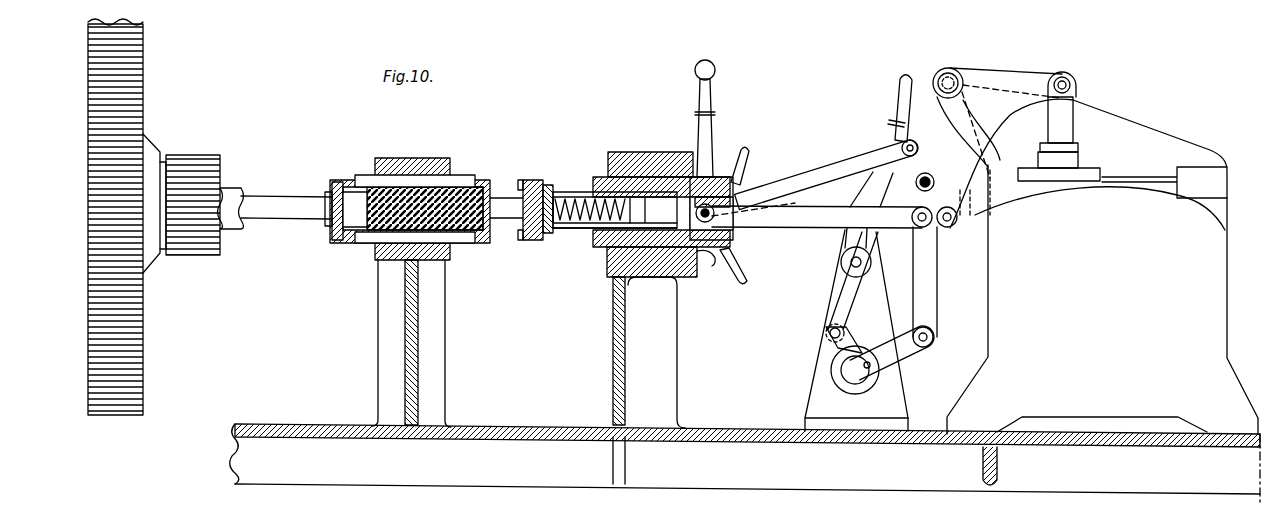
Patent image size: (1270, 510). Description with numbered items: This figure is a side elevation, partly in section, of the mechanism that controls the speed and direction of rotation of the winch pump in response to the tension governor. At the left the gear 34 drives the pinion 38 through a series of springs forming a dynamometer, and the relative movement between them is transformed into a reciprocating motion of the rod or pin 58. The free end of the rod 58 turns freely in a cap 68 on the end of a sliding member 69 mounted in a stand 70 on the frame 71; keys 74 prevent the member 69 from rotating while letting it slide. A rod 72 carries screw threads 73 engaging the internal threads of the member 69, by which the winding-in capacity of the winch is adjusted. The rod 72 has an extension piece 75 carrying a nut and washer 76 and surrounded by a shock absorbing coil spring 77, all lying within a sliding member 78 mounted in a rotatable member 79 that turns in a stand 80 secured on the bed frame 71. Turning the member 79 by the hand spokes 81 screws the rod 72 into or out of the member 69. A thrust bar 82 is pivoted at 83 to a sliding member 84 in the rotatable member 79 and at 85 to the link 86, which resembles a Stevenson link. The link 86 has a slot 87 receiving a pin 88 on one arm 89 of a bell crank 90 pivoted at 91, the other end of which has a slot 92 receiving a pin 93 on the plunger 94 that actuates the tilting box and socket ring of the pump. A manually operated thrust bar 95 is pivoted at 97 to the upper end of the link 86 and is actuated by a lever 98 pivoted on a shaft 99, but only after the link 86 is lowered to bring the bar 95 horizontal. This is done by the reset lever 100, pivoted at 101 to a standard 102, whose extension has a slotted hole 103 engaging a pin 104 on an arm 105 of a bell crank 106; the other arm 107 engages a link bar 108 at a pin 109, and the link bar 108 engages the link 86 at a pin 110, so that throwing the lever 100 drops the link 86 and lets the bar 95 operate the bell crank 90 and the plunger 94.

The gear 34 is at (135, 96).
The pinion 38 is at (206, 156).
The rod or pin 58 is at (265, 217).
The cap 68 is at (330, 231).
The sliding member 69 is at (345, 242).
The stand 70 is at (380, 262).
The frame 71 is at (300, 424).
The rod 72 is at (505, 197).
The screw threads 73 is at (466, 187).
The keys 74 is at (368, 175).
The extension piece 75 is at (578, 198).
The nut and washer 76 is at (603, 247).
The shock absorbing coil spring 77 is at (560, 229).
The sliding member 78 is at (546, 180).
The rotatable member 79 is at (648, 153).
The stand 80 is at (614, 266).
The hand spokes 81 is at (746, 156).
The thrust bar 82 is at (806, 229).
The pivot 83 is at (714, 217).
The sliding member 84 is at (718, 178).
The pivot 85 is at (918, 222).
The link 86 is at (922, 186).
The slot 87 is at (992, 200).
The pin 88 is at (948, 228).
The arm 89 is at (972, 240).
The bell crank 90 is at (995, 90).
The pivot 91 is at (950, 68).
The slot 92 is at (1078, 84).
The pin 93 is at (1063, 77).
The plunger 94 is at (1070, 128).
The manually operated thrust bar 95 is at (815, 162).
The pivot 97 is at (900, 147).
The lever 98 is at (712, 81).
The shaft 99 is at (703, 262).
The reset lever 100 is at (898, 82).
The pivot 101 is at (850, 262).
The standard 102 is at (866, 310).
The slotted hole 103 is at (830, 333).
The pin 104 is at (838, 342).
The arm 105 is at (844, 364).
The bell crank 106 is at (840, 385).
The arm 107 is at (902, 353).
The link bar 108 is at (935, 318).
The pin 109 is at (932, 342).
The pin 110 is at (864, 210).